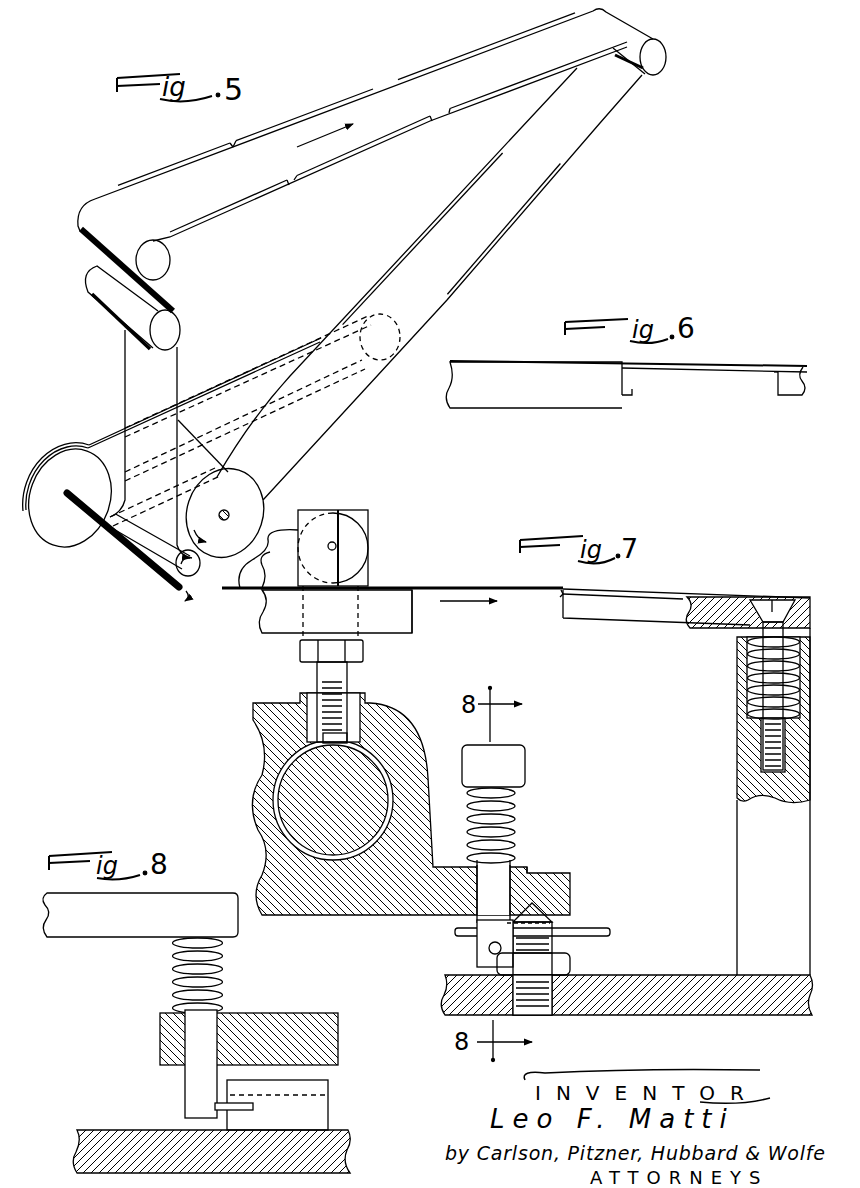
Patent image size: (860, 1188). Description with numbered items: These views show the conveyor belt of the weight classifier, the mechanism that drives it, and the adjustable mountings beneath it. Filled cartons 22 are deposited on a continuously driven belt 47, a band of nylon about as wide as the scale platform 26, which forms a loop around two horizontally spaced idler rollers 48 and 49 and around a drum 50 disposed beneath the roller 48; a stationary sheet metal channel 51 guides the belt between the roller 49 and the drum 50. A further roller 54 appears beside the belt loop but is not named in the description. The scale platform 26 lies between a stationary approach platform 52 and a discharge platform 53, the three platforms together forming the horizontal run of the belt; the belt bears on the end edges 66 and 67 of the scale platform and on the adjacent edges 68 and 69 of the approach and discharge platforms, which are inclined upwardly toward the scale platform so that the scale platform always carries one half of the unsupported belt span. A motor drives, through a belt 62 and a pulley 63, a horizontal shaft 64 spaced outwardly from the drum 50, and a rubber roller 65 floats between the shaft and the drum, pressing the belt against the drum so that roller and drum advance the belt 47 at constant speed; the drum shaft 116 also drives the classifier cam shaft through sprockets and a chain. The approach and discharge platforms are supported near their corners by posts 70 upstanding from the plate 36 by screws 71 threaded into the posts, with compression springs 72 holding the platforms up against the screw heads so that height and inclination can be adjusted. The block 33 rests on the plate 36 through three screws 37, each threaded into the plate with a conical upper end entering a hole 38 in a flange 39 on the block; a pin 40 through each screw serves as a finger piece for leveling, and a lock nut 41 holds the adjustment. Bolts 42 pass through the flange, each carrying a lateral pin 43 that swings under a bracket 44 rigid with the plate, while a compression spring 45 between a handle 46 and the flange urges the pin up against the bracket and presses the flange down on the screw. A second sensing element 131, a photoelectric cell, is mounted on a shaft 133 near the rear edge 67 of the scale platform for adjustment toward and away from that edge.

In FIG. 7, the carton 22 is at (261, 589).
In FIG. 5, the scale platform 26 is at (352, 158).
In FIG. 6, the scale platform 26 is at (552, 403).
In FIG. 7, the scale platform 26 is at (275, 629).
In FIG. 7, the block 33 is at (262, 731).
In FIG. 7, the plate 36 is at (656, 976).
In FIG. 8, the plate 36 is at (121, 1136).
In FIG. 7, the screw 37 is at (560, 944).
In FIG. 7, the hole 38 is at (555, 926).
In FIG. 7, the flange 39 is at (572, 894).
In FIG. 8, the flange 39 is at (339, 1040).
In FIG. 7, the pin 40 is at (612, 929).
In FIG. 7, the lock nut 41 is at (575, 963).
In FIG. 7, the bolt 42 is at (500, 826).
In FIG. 8, the bolt 42 is at (190, 1075).
In FIG. 7, the pin 43 is at (486, 948).
In FIG. 8, the pin 43 is at (255, 1110).
In FIG. 7, the bracket 44 is at (476, 941).
In FIG. 8, the bracket 44 is at (329, 1105).
In FIG. 7, the compression spring 45 is at (517, 812).
In FIG. 8, the compression spring 45 is at (223, 981).
In FIG. 7, the handle 46 is at (526, 764).
In FIG. 8, the handle 46 is at (108, 928).
In FIG. 5, the belt 47 is at (118, 207).
In FIG. 6, the belt 47 is at (715, 343).
In FIG. 7, the belt 47 is at (481, 588).
In FIG. 5, the idler roller 48 is at (100, 208).
In FIG. 5, the idler roller 49 is at (664, 58).
In FIG. 5, the drum 50 is at (246, 484).
In FIG. 5, the sheet metal channel 51 is at (531, 208).
In FIG. 5, the approach platform 52 is at (243, 203).
In FIG. 5, the discharge platform 53 is at (478, 56).
In FIG. 6, the discharge platform 53 is at (790, 393).
In FIG. 7, the discharge platform 53 is at (630, 613).
In FIG. 5, the roller 54 is at (180, 327).
In FIG. 5, the belt 62 is at (260, 367).
In FIG. 5, the pulley 63 is at (72, 533).
In FIG. 5, the horizontal shaft 64 is at (160, 556).
In FIG. 5, the rubber roller 65 is at (166, 577).
In FIG. 5, the end edge 66 is at (293, 181).
In FIG. 5, the end edge 67 is at (429, 124).
In FIG. 6, the end edge 67 is at (628, 395).
In FIG. 7, the end edge 67 is at (414, 622).
In FIG. 5, the end edge 68 is at (234, 147).
In FIG. 5, the end edge 69 is at (450, 113).
In FIG. 6, the end edge 69 is at (777, 383).
In FIG. 7, the end edge 69 is at (561, 595).
In FIG. 7, the post 70 is at (744, 850).
In FIG. 7, the screw 71 is at (775, 600).
In FIG. 7, the compression spring 72 is at (751, 683).
In FIG. 5, the drum shaft 116 is at (229, 505).
In FIG. 7, the second sensing element 131 is at (367, 541).
In FIG. 7, the shaft 133 is at (288, 787).